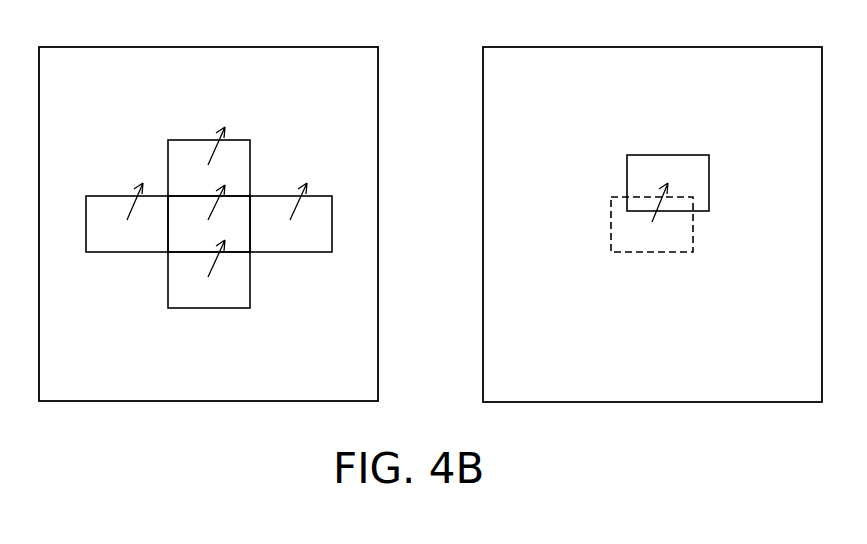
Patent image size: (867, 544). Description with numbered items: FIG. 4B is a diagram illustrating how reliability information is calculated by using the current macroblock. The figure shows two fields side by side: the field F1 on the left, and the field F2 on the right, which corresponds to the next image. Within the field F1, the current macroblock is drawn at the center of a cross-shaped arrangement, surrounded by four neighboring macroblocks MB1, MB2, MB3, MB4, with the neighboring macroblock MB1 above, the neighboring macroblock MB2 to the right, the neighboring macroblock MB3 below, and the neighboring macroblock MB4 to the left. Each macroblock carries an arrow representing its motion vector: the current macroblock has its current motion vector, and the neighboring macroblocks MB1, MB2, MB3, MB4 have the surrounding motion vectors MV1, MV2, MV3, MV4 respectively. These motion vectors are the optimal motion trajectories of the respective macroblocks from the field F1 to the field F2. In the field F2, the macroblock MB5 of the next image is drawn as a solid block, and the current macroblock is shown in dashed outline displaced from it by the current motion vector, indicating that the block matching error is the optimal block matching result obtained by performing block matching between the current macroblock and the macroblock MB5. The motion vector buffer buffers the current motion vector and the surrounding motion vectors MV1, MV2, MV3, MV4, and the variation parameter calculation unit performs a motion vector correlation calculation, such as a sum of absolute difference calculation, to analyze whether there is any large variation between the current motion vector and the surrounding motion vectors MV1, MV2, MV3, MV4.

The field F1 is at (270, 47).
The field F2 is at (715, 47).
The neighboring macroblock MB1 is at (209, 169).
The neighboring macroblock MB2 is at (291, 224).
The neighboring macroblock MB3 is at (209, 280).
The neighboring macroblock MB4 is at (127, 224).
The macroblock of the next image MB5 is at (668, 183).
The surrounding motion vector MV1 is at (201, 150).
The surrounding motion vector MV2 is at (282, 204).
The surrounding motion vector MV3 is at (201, 260).
The surrounding motion vector MV4 is at (118, 204).